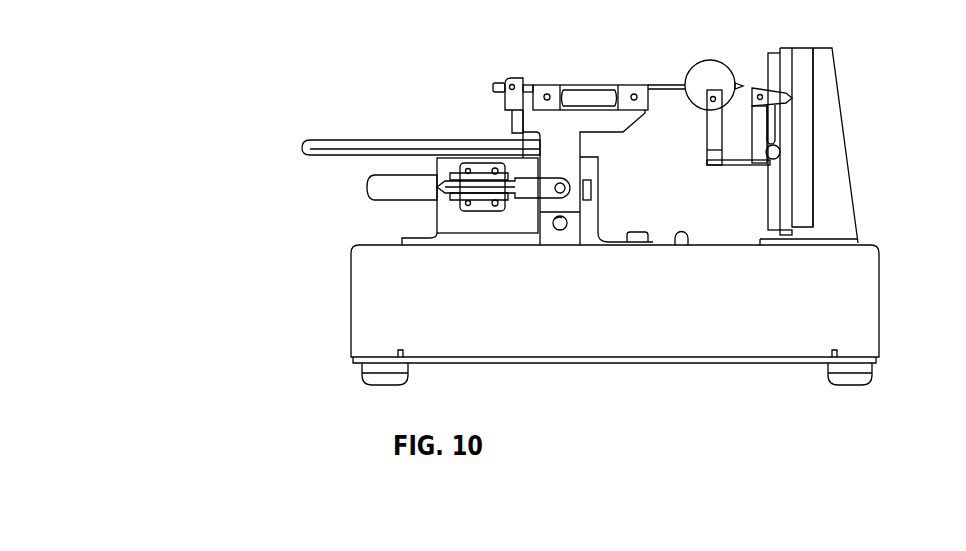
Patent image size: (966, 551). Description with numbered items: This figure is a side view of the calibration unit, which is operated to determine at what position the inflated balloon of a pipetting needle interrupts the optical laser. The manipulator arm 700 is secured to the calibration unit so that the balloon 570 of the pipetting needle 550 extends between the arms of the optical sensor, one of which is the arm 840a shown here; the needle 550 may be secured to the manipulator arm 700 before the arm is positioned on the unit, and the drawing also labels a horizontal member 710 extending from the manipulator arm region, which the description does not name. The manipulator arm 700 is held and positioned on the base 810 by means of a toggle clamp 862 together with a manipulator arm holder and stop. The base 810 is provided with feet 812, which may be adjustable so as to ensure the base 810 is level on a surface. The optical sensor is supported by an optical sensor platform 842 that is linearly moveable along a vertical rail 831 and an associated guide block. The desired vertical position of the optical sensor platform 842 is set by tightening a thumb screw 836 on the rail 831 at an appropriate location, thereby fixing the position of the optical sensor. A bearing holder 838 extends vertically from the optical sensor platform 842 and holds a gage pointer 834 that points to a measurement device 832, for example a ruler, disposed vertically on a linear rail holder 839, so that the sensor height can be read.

The pipetting needle 550 is at (580, 82).
The balloon 570 is at (720, 64).
The manipulator arm 700 is at (575, 108).
The arm 710 is at (323, 142).
The base 810 is at (348, 282).
The feet 812 is at (362, 382).
The vertical rail 831 is at (767, 62).
The measurement device 832 is at (812, 80).
The gage pointer 834 is at (787, 103).
The thumb screw 836 is at (778, 160).
The bearing holder 838 is at (752, 133).
The linear rail holder 839 is at (842, 112).
The arm of optical sensor 840a is at (712, 141).
The optical sensor platform 842 is at (732, 166).
The toggle clamp 862 is at (460, 177).